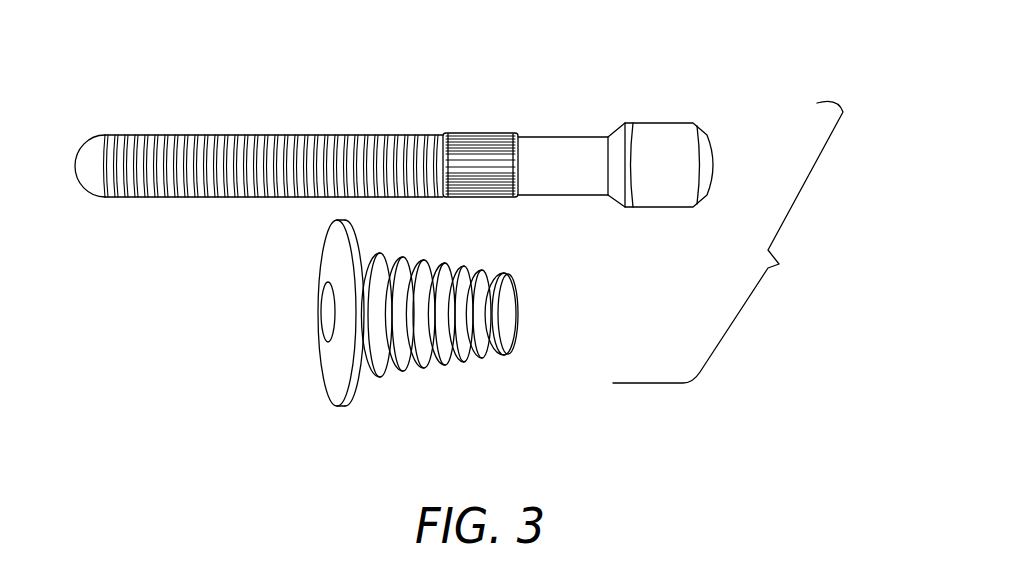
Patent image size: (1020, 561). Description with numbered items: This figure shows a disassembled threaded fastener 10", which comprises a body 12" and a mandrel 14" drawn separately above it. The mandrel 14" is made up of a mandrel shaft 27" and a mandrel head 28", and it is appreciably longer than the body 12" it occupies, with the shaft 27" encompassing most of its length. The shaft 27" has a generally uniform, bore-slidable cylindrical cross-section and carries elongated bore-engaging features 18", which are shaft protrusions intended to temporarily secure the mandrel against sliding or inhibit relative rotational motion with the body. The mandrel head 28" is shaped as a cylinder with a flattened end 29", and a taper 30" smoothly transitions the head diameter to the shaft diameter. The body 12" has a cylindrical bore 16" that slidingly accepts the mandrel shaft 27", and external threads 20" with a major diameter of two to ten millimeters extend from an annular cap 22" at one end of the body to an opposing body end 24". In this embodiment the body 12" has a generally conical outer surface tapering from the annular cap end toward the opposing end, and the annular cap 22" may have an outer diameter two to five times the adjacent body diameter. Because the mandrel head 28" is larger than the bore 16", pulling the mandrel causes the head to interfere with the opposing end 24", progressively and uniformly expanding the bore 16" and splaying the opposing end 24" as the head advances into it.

The fastener 10 is at (786, 269).
The body 12 is at (431, 339).
The mandrel 14 is at (325, 134).
The bore 16 is at (327, 312).
The elongated bore-engaging features 18 is at (481, 153).
The external threads 20 is at (418, 372).
The annular cap 22 is at (318, 348).
The opposing body end 24 is at (519, 308).
The mandrel shaft 27 is at (242, 134).
The mandrel head 28 is at (665, 141).
The flattened end 29 is at (720, 162).
The taper 30 is at (614, 133).